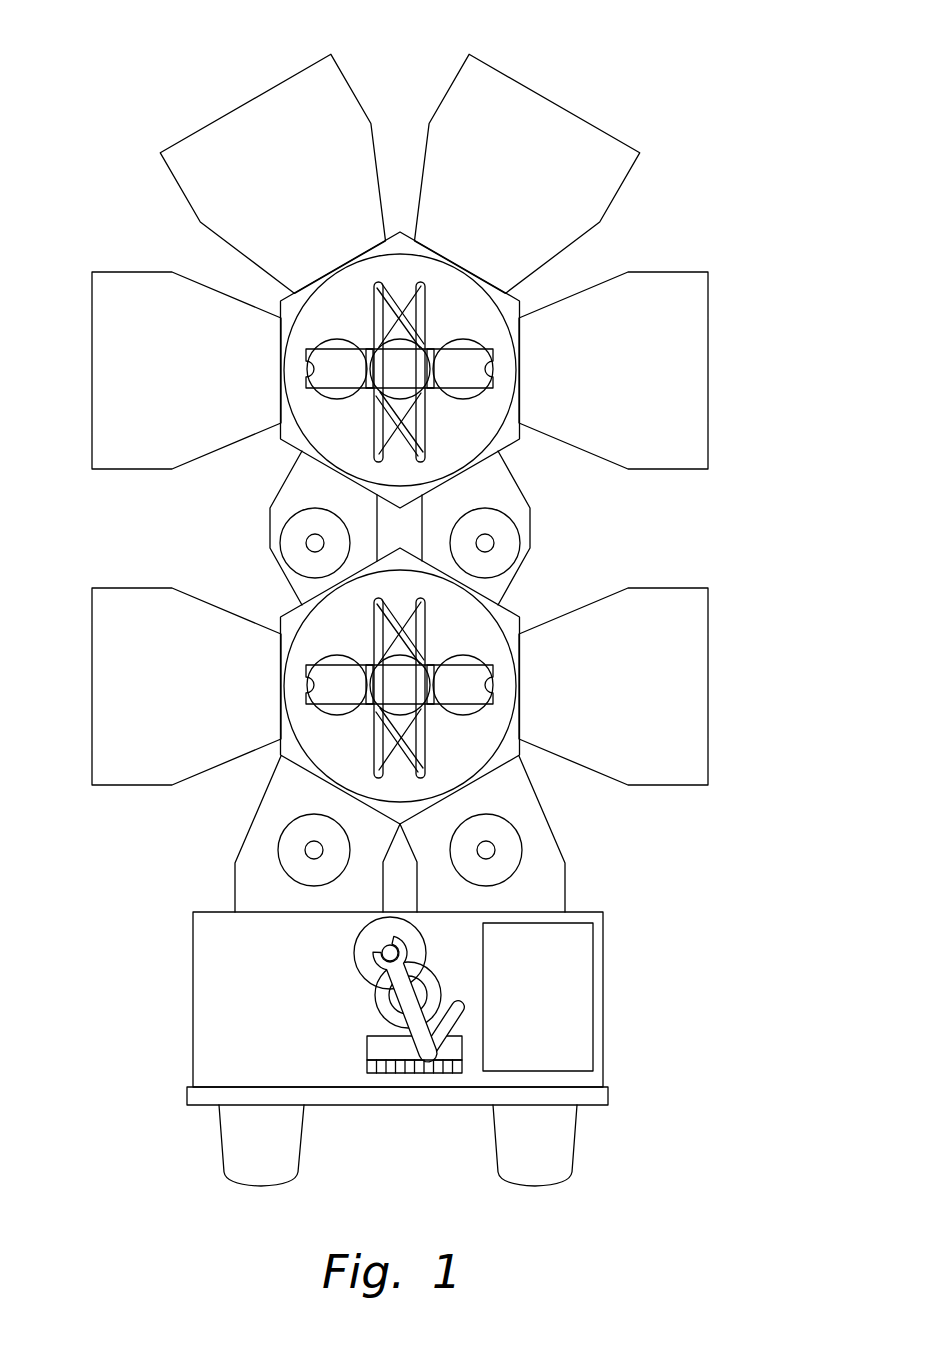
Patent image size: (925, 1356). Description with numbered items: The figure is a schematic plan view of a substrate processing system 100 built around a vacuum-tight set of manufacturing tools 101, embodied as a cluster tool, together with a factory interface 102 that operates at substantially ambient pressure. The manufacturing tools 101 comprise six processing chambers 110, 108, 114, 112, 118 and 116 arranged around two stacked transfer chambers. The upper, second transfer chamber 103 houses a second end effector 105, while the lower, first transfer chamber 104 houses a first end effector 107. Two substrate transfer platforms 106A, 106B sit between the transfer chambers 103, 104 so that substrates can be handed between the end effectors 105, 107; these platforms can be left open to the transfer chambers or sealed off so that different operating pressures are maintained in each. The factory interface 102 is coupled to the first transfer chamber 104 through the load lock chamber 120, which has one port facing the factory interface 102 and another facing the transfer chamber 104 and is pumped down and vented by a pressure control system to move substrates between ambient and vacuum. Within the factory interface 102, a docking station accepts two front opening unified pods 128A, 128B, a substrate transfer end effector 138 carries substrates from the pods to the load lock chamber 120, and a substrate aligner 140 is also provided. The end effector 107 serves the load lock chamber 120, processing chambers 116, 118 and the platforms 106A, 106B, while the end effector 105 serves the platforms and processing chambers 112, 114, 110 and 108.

The processing system 100 is at (110, 31).
The manufacturing tools 101 is at (798, 53).
The factory interface 102 is at (799, 878).
The second transfer chamber 103 is at (356, 326).
The first transfer chamber 104 is at (356, 642).
The second end effector 105 is at (420, 425).
The substrate transfer platform 106A is at (512, 497).
The substrate transfer platform 106B is at (288, 497).
The first end effector 107 is at (420, 741).
The processing chamber 108 is at (538, 94).
The processing chamber 110 is at (262, 94).
The processing chamber 112 is at (708, 333).
The processing chamber 114 is at (92, 333).
The processing chamber 116 is at (708, 649).
The processing chamber 118 is at (92, 649).
The load lock chamber 120 is at (247, 838).
The front opening unified pod 128A is at (290, 1153).
The front opening unified pod 128B is at (564, 1153).
The substrate transfer end effector 138 is at (382, 1073).
The substrate aligner 140 is at (578, 1003).